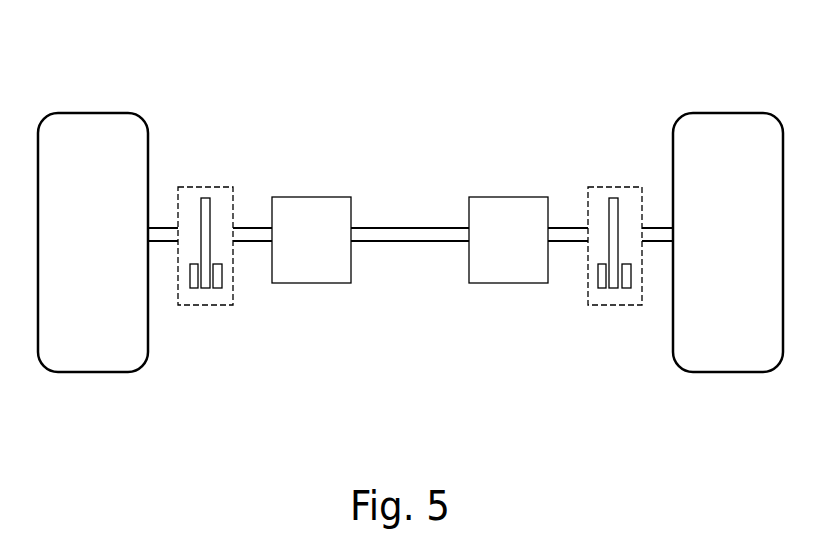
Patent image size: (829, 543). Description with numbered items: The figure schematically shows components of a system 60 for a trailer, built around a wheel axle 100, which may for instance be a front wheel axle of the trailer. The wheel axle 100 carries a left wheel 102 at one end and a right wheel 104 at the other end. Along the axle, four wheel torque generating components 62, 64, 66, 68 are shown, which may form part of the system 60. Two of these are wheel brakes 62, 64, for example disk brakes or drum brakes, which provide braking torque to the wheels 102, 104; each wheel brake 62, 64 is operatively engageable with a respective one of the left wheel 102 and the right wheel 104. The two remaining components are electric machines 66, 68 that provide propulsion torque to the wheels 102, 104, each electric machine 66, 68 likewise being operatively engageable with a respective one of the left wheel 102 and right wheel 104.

The system 60 is at (243, 77).
The wheel brake 62 is at (205, 305).
The wheel brake 64 is at (613, 305).
The electric machine 66 is at (313, 283).
The electric machine 68 is at (507, 283).
The wheel axle 100 is at (402, 225).
The left wheel 102 is at (99, 372).
The right wheel 104 is at (718, 372).